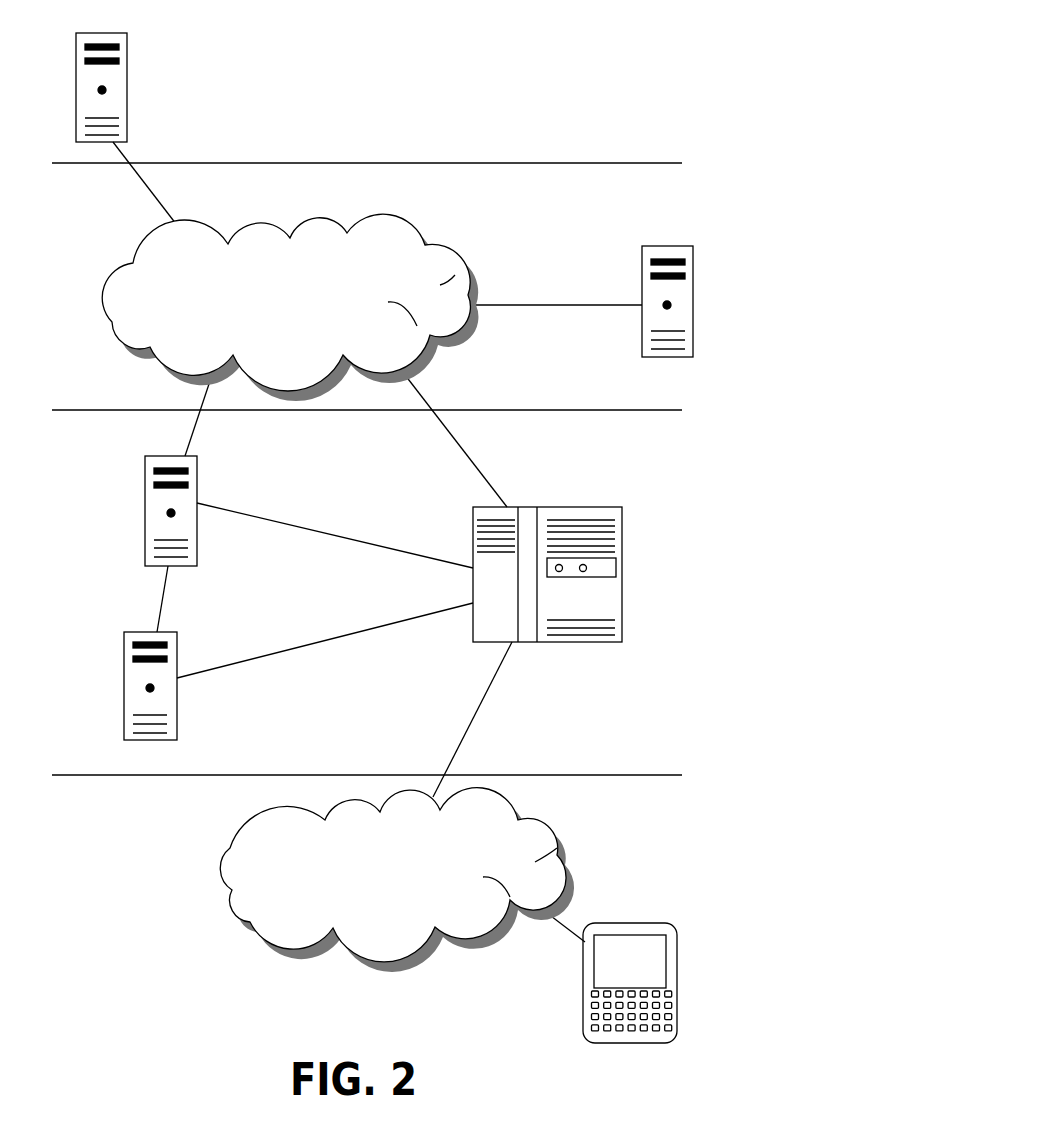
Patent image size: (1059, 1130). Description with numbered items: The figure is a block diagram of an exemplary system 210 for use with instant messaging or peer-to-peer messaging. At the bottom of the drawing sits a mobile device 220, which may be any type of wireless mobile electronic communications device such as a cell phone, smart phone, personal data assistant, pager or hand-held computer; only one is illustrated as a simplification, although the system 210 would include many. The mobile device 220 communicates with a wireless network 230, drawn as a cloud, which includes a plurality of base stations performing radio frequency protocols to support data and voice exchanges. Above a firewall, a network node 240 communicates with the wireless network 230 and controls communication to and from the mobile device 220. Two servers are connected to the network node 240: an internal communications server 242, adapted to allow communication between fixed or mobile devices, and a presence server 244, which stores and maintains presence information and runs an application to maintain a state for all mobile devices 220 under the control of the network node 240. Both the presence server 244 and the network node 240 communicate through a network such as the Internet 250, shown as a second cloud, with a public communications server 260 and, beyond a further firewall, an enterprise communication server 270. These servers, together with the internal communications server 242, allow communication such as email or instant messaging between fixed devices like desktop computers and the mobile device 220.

The system 210 is at (641, 125).
The mobile device 220 is at (663, 923).
The wireless network 230 is at (535, 860).
The network node 240 is at (623, 563).
The internal communications server 242 is at (126, 694).
The presence server 244 is at (147, 505).
The Internet 250 is at (433, 248).
The public communications server 260 is at (693, 301).
The enterprise communication server 270 is at (128, 85).